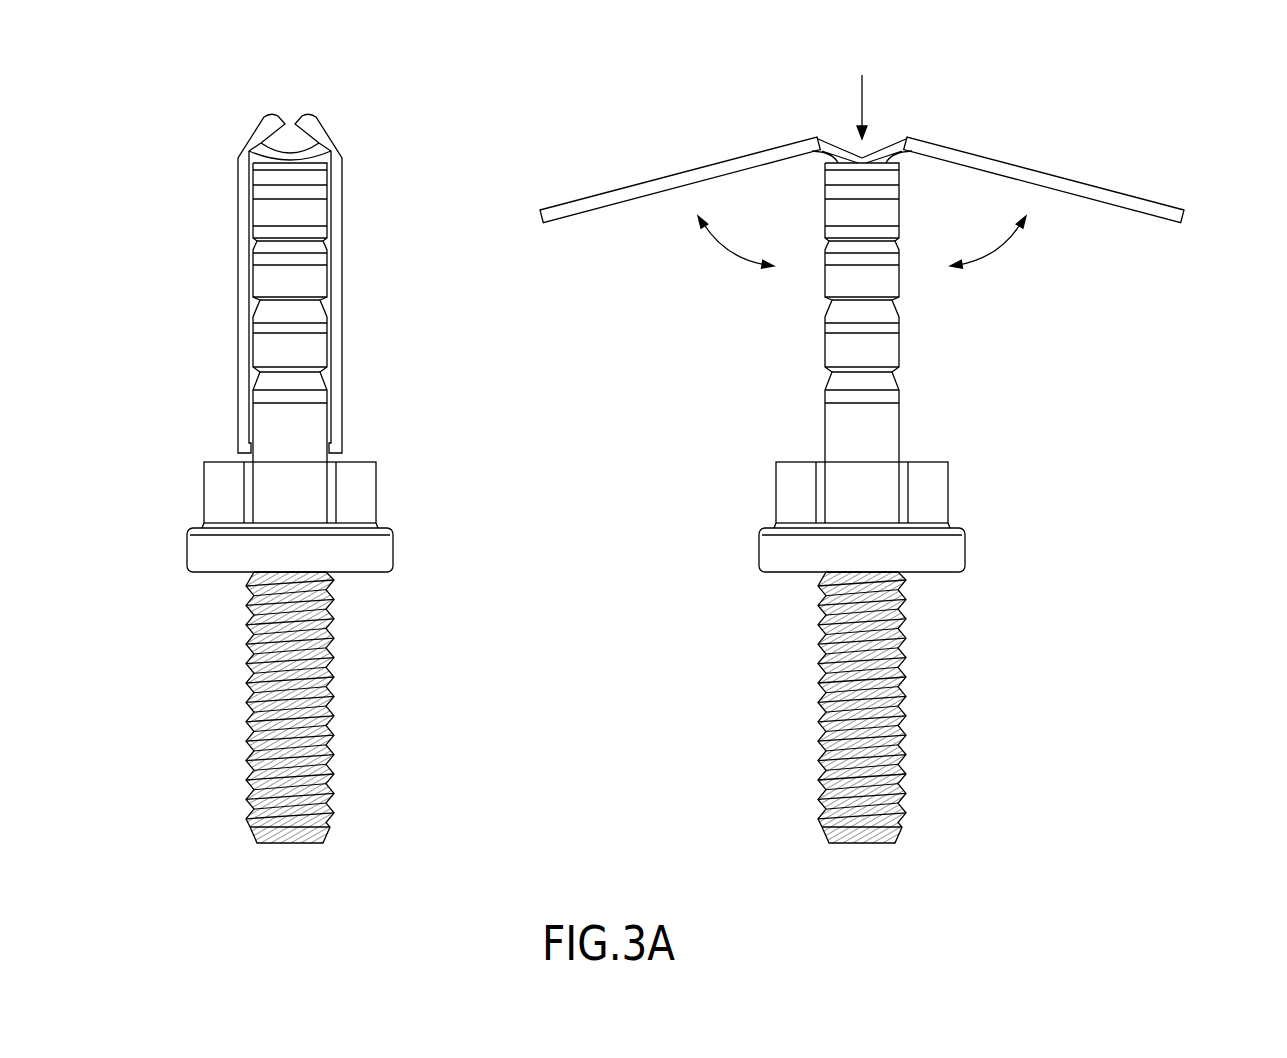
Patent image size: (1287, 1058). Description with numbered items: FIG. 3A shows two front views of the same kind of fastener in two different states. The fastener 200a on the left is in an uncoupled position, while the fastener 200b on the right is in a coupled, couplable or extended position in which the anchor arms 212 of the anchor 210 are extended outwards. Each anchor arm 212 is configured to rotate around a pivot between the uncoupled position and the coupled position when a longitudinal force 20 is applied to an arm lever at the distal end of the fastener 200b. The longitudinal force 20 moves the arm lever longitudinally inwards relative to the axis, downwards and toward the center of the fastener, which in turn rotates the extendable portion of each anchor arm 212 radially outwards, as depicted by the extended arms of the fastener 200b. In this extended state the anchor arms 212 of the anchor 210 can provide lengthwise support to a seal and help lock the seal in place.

The fastener 200a is at (192, 120).
The fastener 200b is at (772, 74).
The longitudinal force 20 is at (864, 101).
The anchor arms 212 is at (684, 170).
The anchor 210 is at (1173, 187).